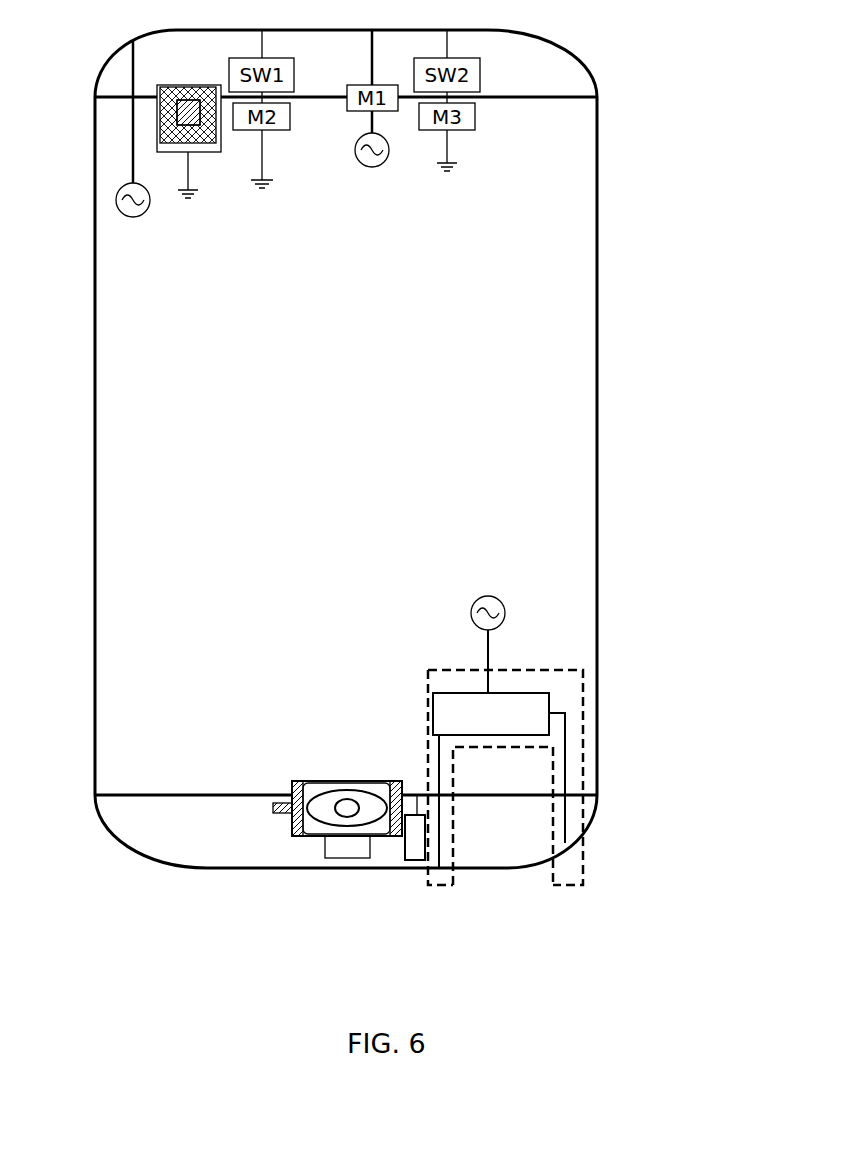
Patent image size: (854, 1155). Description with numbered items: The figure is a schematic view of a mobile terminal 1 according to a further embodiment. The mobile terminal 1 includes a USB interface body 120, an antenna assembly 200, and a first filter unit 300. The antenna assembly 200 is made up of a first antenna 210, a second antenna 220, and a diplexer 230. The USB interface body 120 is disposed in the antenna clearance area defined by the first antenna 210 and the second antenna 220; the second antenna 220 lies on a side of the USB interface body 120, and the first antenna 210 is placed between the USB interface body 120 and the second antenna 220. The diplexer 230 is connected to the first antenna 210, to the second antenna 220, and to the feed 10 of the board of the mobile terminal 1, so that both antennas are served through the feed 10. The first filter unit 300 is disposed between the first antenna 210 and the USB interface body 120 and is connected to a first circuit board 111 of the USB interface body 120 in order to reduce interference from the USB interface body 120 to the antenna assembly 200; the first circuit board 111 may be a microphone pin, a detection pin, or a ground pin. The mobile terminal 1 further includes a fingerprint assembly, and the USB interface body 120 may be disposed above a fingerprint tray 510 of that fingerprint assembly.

The mobile terminal 1 is at (597, 220).
The feed 10 is at (476, 600).
The antenna assembly 200 is at (451, 765).
The diplexer 230 is at (455, 692).
The second antenna 220 is at (565, 742).
The first antenna 210 is at (439, 833).
The first filter unit 300 is at (413, 860).
The fingerprint tray 510 is at (233, 861).
The USB interface body 120 is at (323, 847).
The first circuit board 111 is at (397, 820).